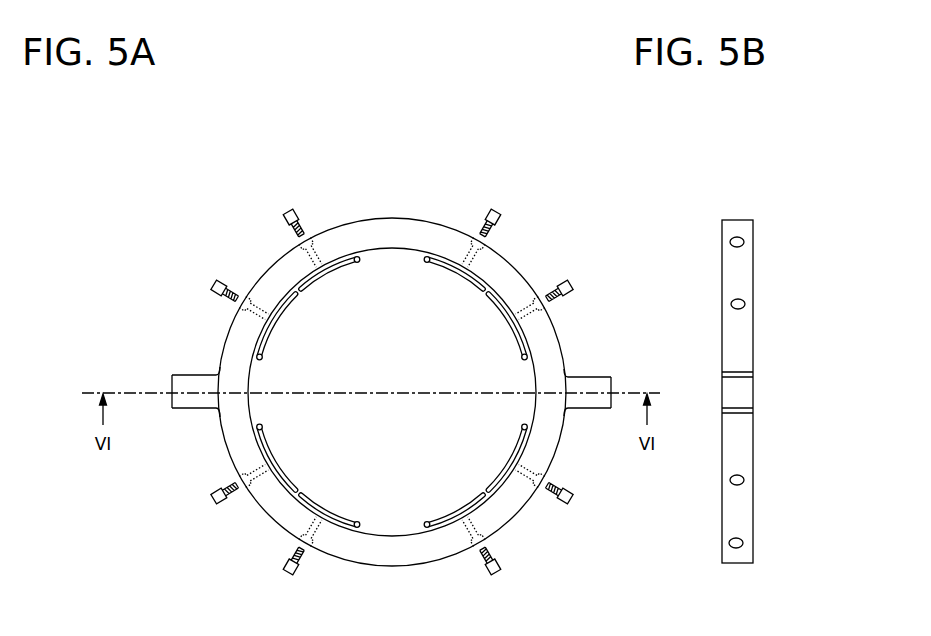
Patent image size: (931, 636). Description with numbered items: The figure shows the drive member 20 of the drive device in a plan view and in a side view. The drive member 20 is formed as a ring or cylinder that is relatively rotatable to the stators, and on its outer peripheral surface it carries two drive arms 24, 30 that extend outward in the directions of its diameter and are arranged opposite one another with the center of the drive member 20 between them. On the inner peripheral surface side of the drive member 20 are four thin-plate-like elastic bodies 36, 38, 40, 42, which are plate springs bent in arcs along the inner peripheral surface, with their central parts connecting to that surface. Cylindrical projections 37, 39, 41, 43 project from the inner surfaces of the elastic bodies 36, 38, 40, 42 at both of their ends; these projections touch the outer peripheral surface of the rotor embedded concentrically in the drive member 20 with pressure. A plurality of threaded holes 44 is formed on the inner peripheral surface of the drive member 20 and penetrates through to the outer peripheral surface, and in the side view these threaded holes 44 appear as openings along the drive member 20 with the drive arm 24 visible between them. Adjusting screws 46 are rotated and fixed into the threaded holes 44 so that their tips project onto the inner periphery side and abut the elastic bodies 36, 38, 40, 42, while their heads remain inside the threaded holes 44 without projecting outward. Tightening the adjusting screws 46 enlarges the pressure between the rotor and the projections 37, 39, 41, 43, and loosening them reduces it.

In FIG. 5A, the drive member 20 is at (388, 228).
In FIG. 5B, the drive member 20 is at (745, 344).
In FIG. 5A, the drive arm 24 is at (590, 385).
In FIG. 5B, the drive arm 24 is at (745, 395).
In FIG. 5A, the drive arm 30 is at (188, 408).
In FIG. 5A, the elastic body 36 is at (490, 488).
In FIG. 5A, the cylindrical projection 37 is at (523, 428).
In FIG. 5A, the elastic body 38 is at (312, 502).
In FIG. 5A, the cylindrical projection 39 is at (262, 427).
In FIG. 5A, the elastic body 40 is at (287, 303).
In FIG. 5A, the cylindrical projection 41 is at (357, 263).
In FIG. 5A, the elastic body 42 is at (481, 295).
In FIG. 5A, the cylindrical projection 43 is at (428, 268).
In FIG. 5A, the threaded hole 44 is at (473, 240).
In FIG. 5B, the threaded hole 44 is at (747, 242).
In FIG. 5A, the adjusting screw 46 is at (504, 214).